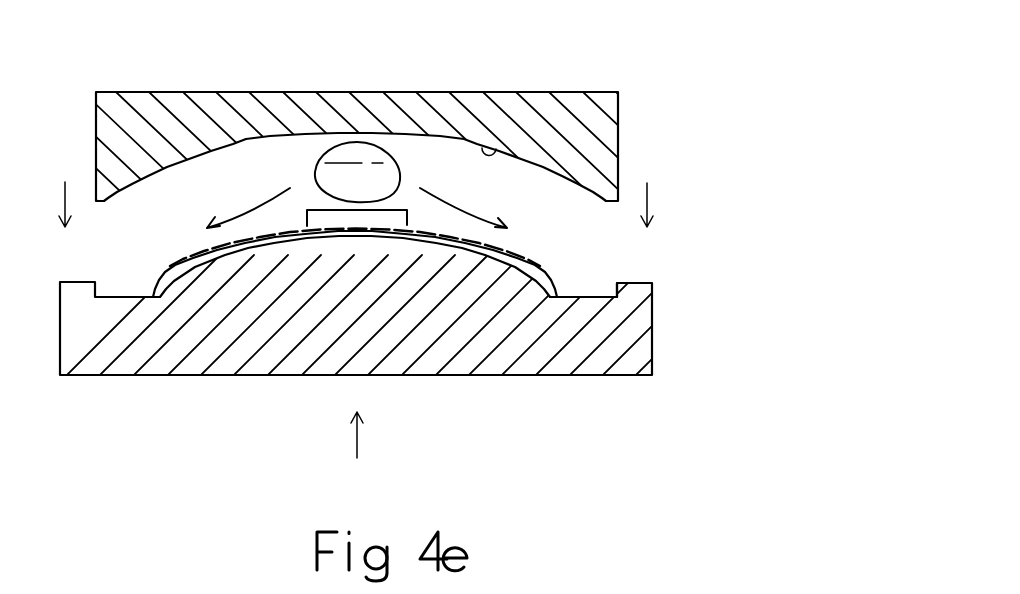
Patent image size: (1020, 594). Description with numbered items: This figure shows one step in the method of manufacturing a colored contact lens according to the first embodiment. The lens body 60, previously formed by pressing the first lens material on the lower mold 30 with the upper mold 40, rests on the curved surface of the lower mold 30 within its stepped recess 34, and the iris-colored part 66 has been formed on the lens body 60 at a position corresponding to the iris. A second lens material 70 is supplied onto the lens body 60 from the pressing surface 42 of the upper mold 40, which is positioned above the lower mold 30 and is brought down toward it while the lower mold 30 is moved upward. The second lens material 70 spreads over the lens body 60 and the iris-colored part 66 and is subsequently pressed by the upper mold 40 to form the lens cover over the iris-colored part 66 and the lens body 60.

The lower mold 30 is at (640, 330).
The lower mold recess step 34 is at (592, 297).
The upper mold 40 is at (593, 110).
The pressing surface 42 is at (492, 152).
The lens body 60 is at (503, 260).
The iris-colored part 66 is at (500, 245).
The second lens material 70 is at (327, 173).